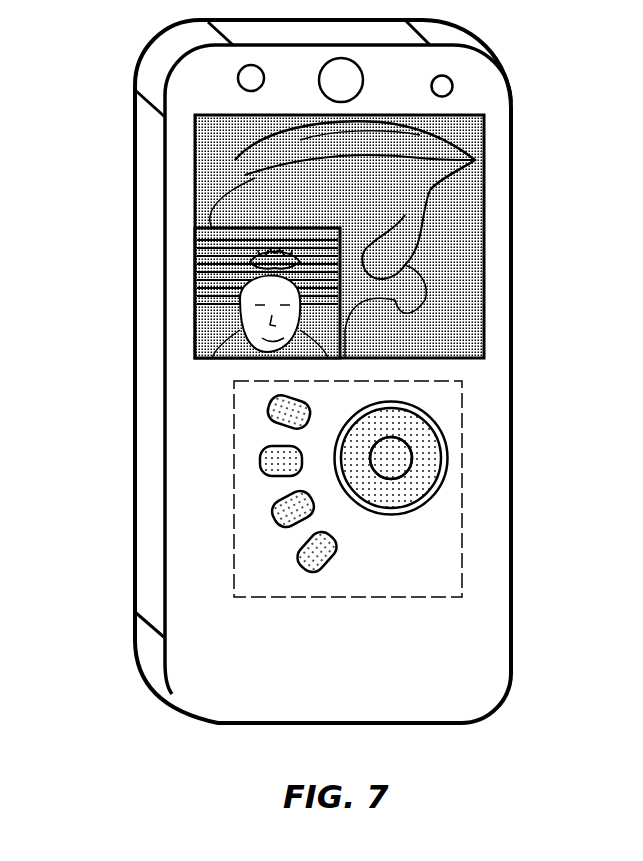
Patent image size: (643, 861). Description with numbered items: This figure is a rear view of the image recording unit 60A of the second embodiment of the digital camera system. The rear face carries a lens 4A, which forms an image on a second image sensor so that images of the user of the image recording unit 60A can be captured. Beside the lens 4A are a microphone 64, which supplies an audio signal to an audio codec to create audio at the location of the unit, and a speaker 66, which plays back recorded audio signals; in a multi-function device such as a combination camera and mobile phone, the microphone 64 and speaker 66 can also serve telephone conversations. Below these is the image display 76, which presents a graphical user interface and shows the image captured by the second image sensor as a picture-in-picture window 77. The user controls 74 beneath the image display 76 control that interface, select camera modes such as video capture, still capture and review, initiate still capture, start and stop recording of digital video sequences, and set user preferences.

The lens 4A is at (482, 68).
The image recording unit 60A is at (511, 397).
The microphone 64 is at (238, 78).
The speaker 66 is at (453, 85).
The image display 76 is at (484, 208).
The picture-in-picture window 77 is at (210, 325).
The user controls 74 is at (462, 510).